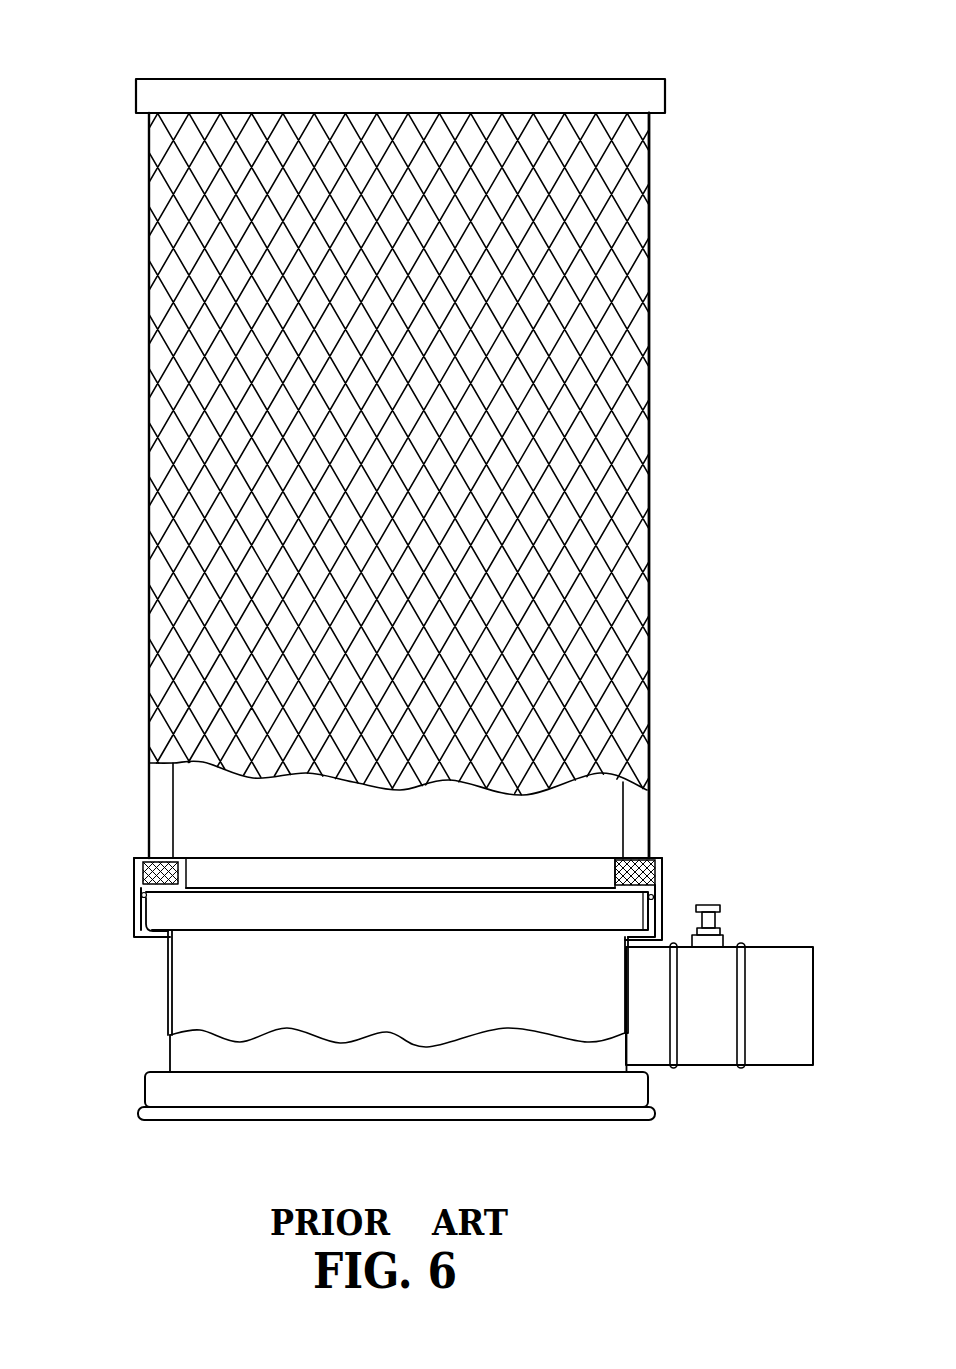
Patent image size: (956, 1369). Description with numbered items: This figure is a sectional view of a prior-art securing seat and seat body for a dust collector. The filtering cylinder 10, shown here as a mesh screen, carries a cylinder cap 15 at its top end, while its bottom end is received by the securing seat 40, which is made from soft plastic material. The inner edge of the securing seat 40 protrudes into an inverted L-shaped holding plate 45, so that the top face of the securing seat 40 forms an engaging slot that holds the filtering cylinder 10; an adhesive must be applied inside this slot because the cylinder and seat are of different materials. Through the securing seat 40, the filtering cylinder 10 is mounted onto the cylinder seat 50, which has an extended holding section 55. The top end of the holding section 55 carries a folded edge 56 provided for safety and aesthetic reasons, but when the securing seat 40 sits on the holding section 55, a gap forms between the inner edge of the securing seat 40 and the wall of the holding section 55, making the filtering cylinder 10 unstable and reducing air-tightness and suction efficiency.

The filtering cylinder 10 is at (622, 590).
The cylinder cap 15 is at (462, 88).
The securing seat 40 is at (662, 900).
The inverted L-shaped holding plate 45 is at (600, 860).
The cylinder seat 50 is at (167, 1007).
The holding section 55 is at (137, 932).
The folded edge 56 is at (135, 903).